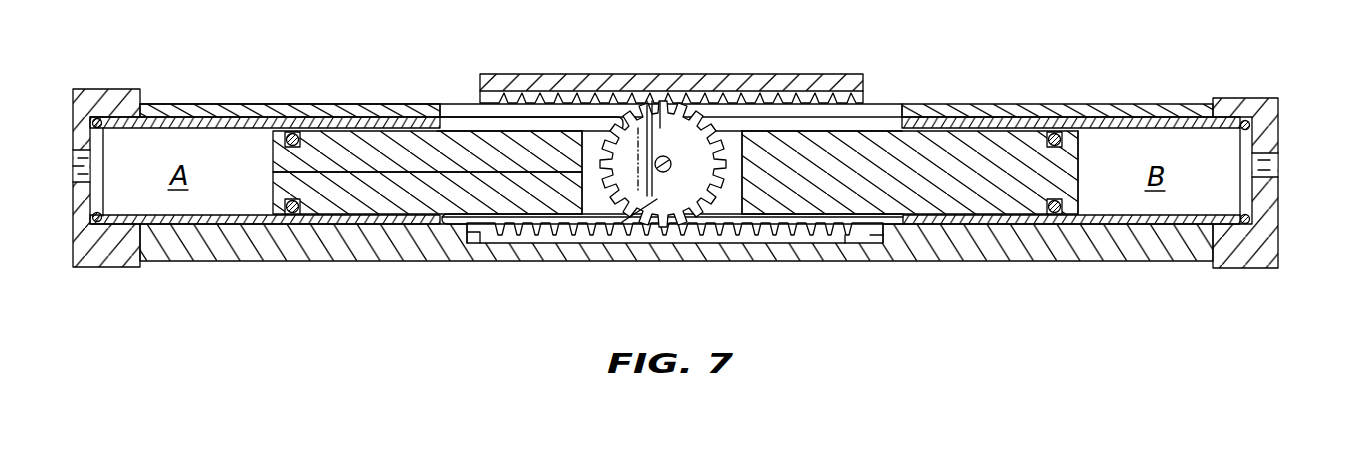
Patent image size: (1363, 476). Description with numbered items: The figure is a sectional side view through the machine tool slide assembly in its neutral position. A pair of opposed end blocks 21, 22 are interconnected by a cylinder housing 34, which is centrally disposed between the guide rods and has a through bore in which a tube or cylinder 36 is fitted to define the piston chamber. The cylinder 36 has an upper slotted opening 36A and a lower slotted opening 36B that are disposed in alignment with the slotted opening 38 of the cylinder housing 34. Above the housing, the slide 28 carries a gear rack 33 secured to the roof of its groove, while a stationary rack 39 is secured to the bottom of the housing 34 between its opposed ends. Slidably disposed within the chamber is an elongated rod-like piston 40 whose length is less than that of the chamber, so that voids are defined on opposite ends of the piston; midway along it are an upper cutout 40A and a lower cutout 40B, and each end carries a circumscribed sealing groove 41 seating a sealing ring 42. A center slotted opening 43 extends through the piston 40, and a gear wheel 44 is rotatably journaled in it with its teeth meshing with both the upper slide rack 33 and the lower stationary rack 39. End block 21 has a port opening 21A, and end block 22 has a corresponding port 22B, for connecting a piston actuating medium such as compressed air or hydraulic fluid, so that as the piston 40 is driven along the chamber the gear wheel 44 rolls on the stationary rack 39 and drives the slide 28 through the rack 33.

The end block 21 is at (73, 120).
The port opening 21A is at (73, 162).
The end block 22 is at (1281, 133).
The right end cap port 22B is at (1274, 165).
The slide 28 is at (690, 76).
The gear rack 33 is at (787, 100).
The cylinder housing 34 is at (990, 250).
The cylinder 36 is at (1140, 135).
The upper slotted opening 36A is at (577, 122).
The lower slotted opening 36B is at (896, 222).
The slotted opening 38 is at (873, 117).
The stationary rack 39 is at (836, 232).
The piston 40 is at (1014, 147).
The upper cutout 40A is at (466, 133).
The lower cutout 40B is at (450, 214).
The sealing groove 41 is at (1058, 196).
The sealing ring 42 is at (288, 214).
The center slotted opening 43 is at (738, 193).
The gear wheel 44 is at (622, 224).